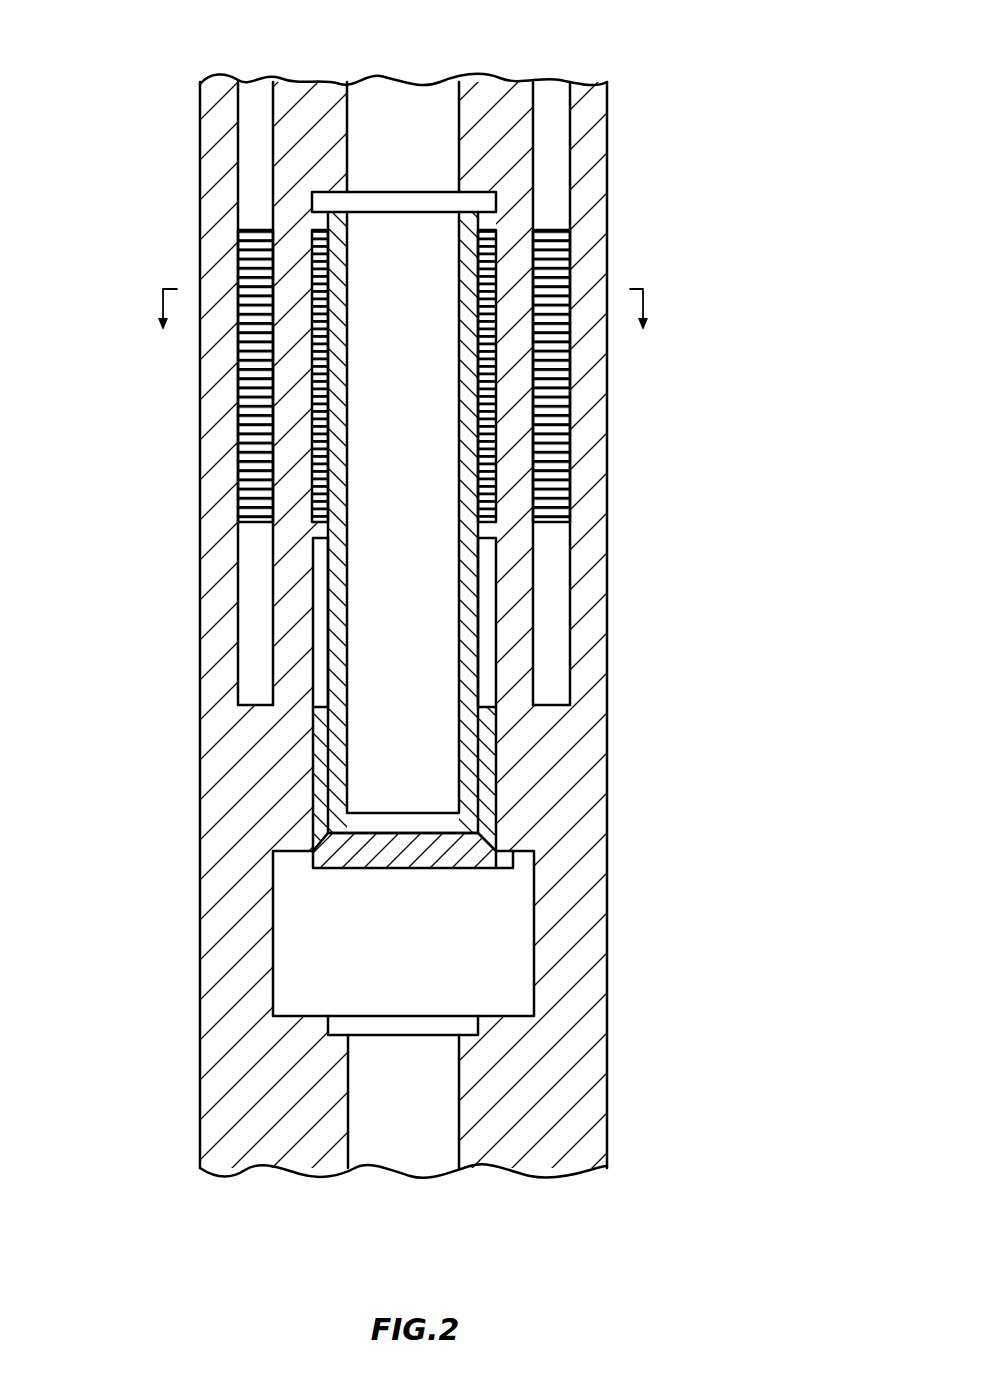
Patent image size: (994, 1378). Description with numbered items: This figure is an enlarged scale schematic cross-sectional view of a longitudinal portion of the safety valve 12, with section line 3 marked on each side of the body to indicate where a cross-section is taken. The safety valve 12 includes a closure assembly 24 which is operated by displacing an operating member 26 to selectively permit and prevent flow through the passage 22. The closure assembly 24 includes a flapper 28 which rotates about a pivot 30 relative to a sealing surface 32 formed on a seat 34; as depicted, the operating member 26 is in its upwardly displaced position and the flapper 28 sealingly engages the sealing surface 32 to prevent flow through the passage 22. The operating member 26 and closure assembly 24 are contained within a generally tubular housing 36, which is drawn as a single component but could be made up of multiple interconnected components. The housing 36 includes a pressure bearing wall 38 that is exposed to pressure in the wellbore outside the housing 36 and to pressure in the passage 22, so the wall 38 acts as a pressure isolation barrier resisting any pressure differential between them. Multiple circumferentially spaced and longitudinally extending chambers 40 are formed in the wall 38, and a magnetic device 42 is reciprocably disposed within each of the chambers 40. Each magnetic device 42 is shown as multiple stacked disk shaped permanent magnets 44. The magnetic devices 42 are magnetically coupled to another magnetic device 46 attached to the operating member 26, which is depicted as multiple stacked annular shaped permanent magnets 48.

The safety valve 12 is at (774, 58).
The passage 22 is at (415, 1135).
The closure assembly 24 is at (384, 885).
The operating member 26 is at (328, 603).
The flapper 28 is at (318, 869).
The pivot 30 is at (505, 859).
The sealing surface 32 is at (484, 848).
The seat 34 is at (498, 763).
The housing 36 is at (612, 1028).
The pressure bearing wall 38 is at (250, 717).
The chambers 40 is at (238, 553).
The magnetic device 42 is at (232, 413).
The permanent magnets 44 is at (237, 458).
The magnetic device 46 is at (305, 248).
The permanent magnets 48 is at (329, 297).
The section line 3 is at (402, 326).